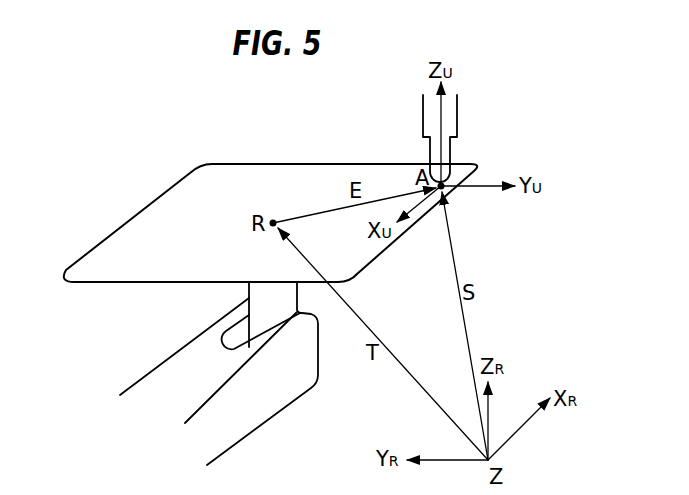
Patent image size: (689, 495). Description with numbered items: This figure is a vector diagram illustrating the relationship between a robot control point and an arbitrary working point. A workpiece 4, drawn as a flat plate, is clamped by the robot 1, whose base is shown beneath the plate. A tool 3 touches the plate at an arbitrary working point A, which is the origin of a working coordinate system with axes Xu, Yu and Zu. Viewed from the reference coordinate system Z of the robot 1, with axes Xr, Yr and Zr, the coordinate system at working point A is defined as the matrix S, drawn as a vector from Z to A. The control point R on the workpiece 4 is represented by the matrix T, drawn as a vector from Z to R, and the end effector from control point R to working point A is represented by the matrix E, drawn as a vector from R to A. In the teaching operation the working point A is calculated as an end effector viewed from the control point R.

The robot 1 is at (257, 412).
The probe 3 is at (457, 117).
The workpiece 4 is at (128, 227).